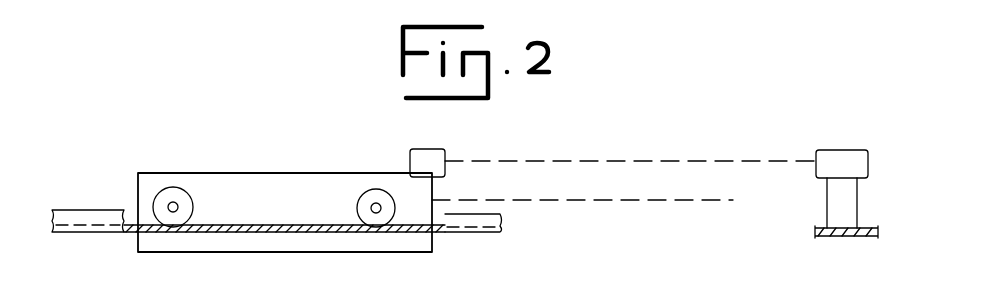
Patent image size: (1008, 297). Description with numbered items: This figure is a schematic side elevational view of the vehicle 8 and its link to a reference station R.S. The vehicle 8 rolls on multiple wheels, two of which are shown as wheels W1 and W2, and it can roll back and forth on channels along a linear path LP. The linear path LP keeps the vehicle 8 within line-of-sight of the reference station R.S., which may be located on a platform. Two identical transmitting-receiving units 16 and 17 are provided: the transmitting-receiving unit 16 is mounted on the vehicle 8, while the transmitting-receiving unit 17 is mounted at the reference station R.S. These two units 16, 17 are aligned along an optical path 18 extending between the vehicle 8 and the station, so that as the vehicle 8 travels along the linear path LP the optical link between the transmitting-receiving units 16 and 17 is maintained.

The vehicle 8 is at (323, 174).
The wheel W1 is at (193, 198).
The wheel W2 is at (364, 192).
The transmitting-receiving unit 16 is at (438, 148).
The transmitting-receiving unit 17 is at (838, 150).
The optical path 18 is at (625, 161).
The linear path LP is at (598, 198).
The reference station R.S. is at (828, 196).